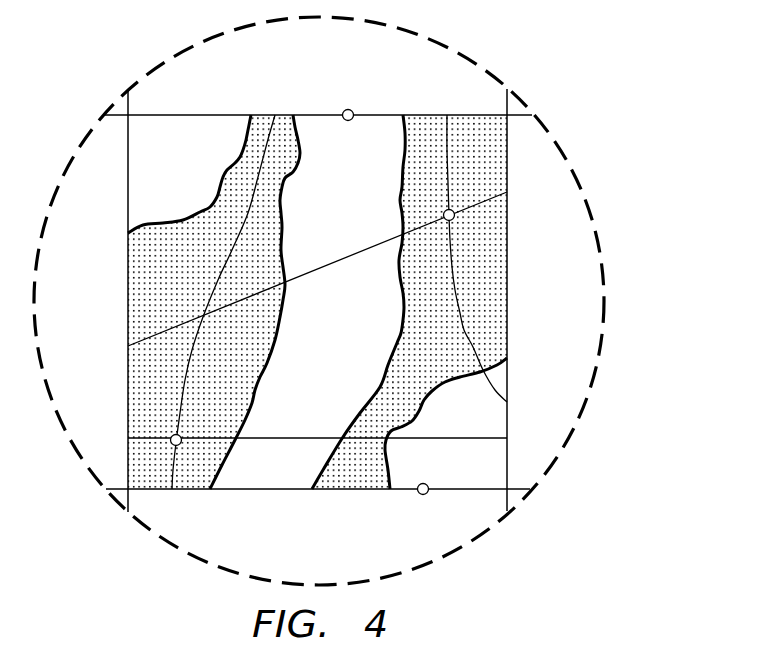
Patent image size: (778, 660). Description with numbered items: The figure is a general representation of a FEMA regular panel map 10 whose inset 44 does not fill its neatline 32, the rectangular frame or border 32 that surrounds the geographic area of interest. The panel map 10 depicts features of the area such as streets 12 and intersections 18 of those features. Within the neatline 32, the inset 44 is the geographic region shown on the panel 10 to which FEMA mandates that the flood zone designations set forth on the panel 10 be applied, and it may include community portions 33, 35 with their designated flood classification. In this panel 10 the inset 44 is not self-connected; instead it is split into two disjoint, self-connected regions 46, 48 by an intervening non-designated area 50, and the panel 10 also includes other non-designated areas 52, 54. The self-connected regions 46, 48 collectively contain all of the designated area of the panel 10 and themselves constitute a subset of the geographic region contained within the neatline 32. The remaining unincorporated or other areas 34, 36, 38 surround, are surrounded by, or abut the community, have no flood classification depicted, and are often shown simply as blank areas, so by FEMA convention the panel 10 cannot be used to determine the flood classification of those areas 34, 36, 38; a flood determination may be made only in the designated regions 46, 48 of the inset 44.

The regular panel map 10 is at (414, 112).
The street 12 is at (348, 257).
The intersection 18 is at (454, 220).
The neatline 32 is at (349, 109).
The portion of a community 33 is at (345, 212).
The unincorporated area 34 is at (417, 303).
The region segment 35 is at (266, 241).
The unincorporated area 36 is at (417, 303).
The unincorporated area 38 is at (242, 93).
The inset 44 is at (240, 389).
The self-connected region 46 is at (250, 357).
The self-connected region 48 is at (443, 355).
The non-designated area 50 is at (187, 172).
The non-designated area 52 is at (330, 338).
The non-designated area 54 is at (463, 475).